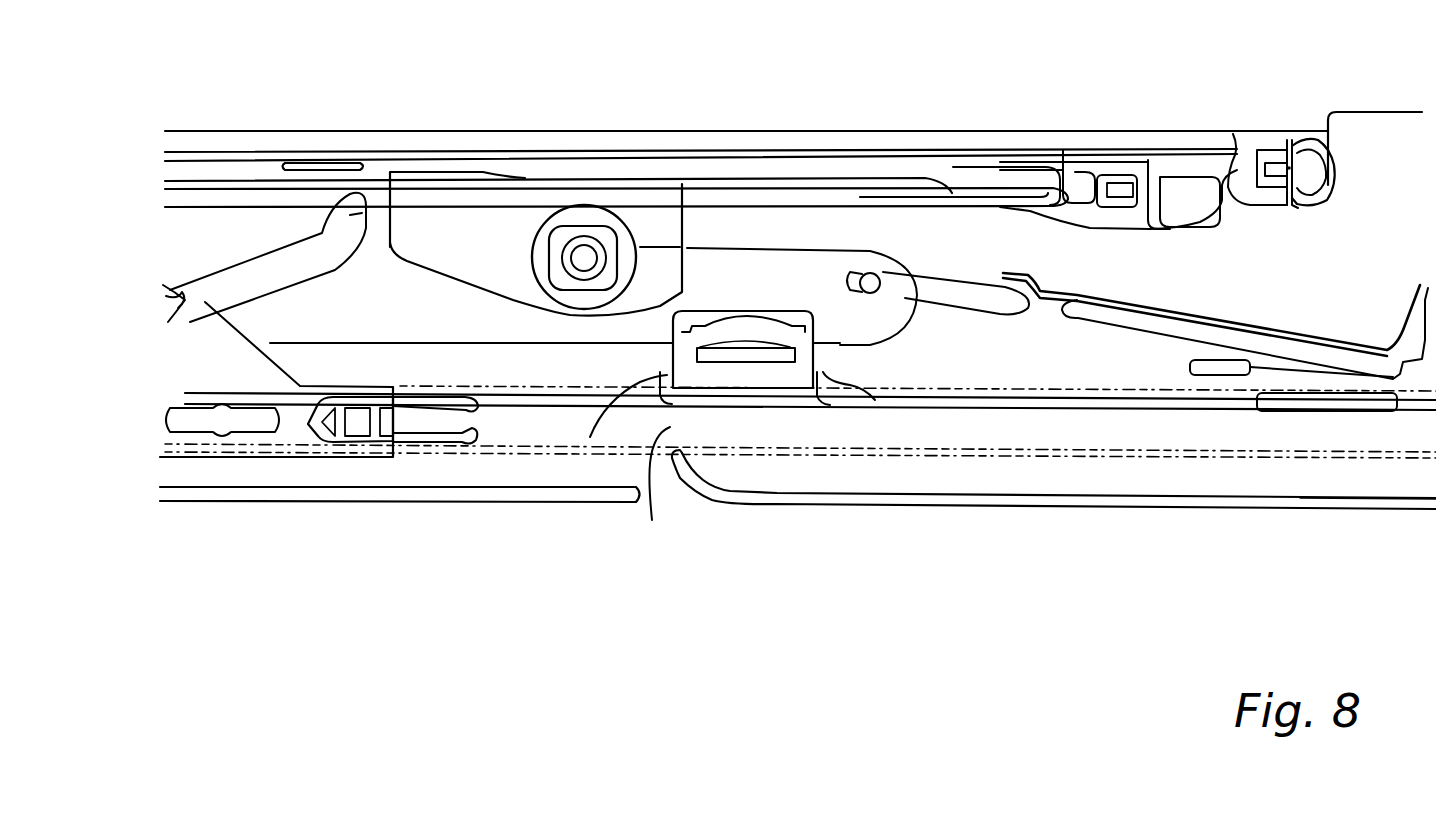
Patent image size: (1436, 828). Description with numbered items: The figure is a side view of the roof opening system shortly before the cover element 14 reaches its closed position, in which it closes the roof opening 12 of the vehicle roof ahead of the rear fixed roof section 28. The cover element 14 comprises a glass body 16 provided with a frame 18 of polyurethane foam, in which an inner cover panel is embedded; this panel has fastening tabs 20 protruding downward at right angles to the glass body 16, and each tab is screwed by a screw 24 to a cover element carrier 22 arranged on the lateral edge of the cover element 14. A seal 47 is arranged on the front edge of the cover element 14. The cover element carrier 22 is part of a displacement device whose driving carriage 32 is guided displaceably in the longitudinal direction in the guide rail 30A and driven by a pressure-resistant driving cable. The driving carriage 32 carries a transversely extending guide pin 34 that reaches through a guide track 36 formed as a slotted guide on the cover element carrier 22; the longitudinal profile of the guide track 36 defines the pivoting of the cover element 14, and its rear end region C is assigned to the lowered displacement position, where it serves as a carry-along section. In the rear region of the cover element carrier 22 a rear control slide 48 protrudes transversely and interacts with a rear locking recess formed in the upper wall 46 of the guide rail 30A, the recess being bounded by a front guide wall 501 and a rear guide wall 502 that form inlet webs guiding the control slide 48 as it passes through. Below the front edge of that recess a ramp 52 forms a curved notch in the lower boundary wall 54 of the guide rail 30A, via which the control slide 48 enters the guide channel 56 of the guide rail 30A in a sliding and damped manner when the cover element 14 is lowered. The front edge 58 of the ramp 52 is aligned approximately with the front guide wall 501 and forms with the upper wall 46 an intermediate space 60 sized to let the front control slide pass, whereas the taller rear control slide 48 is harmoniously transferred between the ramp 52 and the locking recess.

The cover element 14 is at (903, 130).
The glass body 16 is at (1062, 140).
The frame 18 is at (1248, 133).
The seal 47 is at (1300, 138).
The roof opening 12 is at (1322, 142).
The rear fixed roof section 28 is at (1372, 110).
The fastening tabs 20 is at (498, 220).
The cover element carrier 22 is at (717, 270).
The screw 24 is at (581, 250).
The guide pin 34 is at (190, 283).
The guide track 36 is at (289, 266).
The rear guide track end region C is at (358, 212).
The rear control slide 48 is at (748, 312).
The driving carriage 32 is at (240, 370).
The guide rail 30A is at (390, 498).
The front guide wall 501 is at (590, 437).
The rear guide wall 502 is at (835, 380).
The intermediate space 60 is at (652, 520).
The front edge 58 is at (682, 485).
The ramp 52 is at (693, 477).
The guide channel 56 is at (1043, 440).
The upper wall 46 is at (1162, 407).
The lower boundary wall 54 is at (1232, 502).